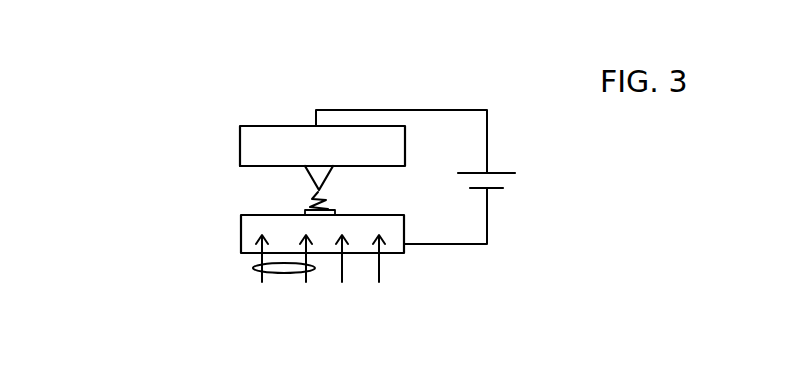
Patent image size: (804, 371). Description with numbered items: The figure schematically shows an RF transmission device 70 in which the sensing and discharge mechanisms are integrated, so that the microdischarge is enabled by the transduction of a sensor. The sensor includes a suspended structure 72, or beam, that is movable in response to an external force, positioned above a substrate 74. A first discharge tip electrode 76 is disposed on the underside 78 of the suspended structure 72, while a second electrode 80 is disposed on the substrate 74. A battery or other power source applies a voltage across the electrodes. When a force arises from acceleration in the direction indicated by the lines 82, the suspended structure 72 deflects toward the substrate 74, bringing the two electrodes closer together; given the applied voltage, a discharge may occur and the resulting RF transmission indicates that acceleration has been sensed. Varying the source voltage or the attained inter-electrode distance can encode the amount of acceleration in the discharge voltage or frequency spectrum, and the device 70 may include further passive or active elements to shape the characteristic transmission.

The device 70 is at (394, 92).
The suspended structure 72 is at (240, 145).
The substrate 74 is at (238, 232).
The first discharge tip electrode 76 is at (310, 180).
The underside 78 is at (260, 166).
The second electrode 80 is at (342, 212).
The lines 82 is at (255, 268).